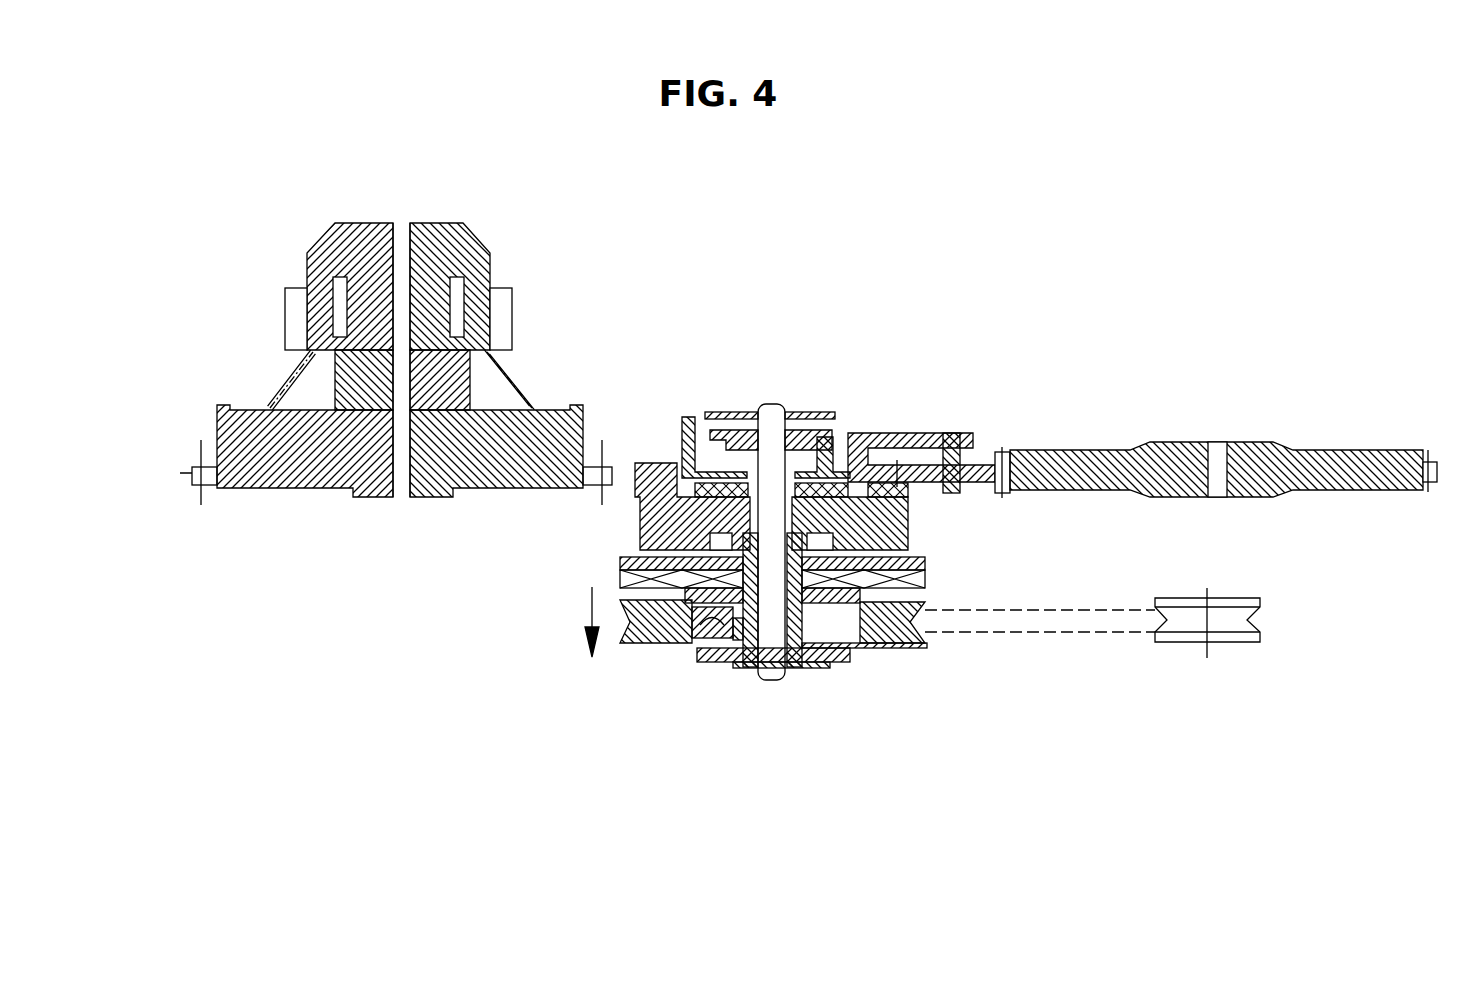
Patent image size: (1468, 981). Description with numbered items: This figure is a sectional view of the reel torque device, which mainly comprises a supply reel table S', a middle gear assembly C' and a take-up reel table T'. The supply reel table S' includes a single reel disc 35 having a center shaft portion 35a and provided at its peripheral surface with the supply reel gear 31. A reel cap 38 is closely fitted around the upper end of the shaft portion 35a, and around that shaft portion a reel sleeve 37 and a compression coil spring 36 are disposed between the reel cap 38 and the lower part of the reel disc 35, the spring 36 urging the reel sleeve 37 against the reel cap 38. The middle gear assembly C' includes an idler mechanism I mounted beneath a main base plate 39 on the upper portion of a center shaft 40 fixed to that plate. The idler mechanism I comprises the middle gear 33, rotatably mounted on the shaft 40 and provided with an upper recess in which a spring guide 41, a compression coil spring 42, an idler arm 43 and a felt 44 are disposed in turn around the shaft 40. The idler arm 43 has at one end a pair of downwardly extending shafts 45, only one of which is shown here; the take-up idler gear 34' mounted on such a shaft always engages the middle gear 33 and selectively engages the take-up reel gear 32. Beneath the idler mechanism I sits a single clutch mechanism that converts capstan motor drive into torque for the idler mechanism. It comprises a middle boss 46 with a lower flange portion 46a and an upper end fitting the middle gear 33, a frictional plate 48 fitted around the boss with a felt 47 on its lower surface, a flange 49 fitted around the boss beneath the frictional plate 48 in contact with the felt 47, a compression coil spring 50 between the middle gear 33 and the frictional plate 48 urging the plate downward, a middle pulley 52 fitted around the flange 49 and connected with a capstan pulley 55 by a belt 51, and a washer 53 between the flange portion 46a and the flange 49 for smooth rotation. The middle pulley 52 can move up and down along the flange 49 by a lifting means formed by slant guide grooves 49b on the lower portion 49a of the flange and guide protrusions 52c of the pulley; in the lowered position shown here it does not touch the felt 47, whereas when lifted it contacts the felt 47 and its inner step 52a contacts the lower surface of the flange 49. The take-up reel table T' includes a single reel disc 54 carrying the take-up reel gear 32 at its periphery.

The supply reel gear 31 is at (192, 473).
The take-up reel gear 32 is at (1433, 468).
The middle gear 33 is at (635, 520).
The take-up idler gear 34' is at (960, 398).
The reel disc 35 is at (286, 456).
The center shaft portion 35a is at (270, 400).
The compression coil spring 36 is at (511, 383).
The reel sleeve 37 is at (280, 294).
The reel cap 38 is at (421, 227).
The main base plate 39 is at (733, 413).
The center shaft 40 is at (770, 404).
The spring guide 41 is at (822, 413).
The compression coil spring 42 is at (707, 412).
The idler arm 43 is at (978, 442).
The felt 44 is at (671, 425).
The downwardly extending shaft 45 is at (945, 430).
The middle boss 46 is at (780, 668).
The flange portion 46a is at (850, 655).
The felt 47 is at (925, 586).
The frictional plate 48 is at (925, 557).
The flange 49 is at (700, 650).
The lower portion 49a is at (828, 670).
The slant guide groove 49b is at (917, 643).
The compression coil spring 50 is at (620, 552).
The belt 51 is at (1110, 622).
The middle pulley 52 is at (935, 645).
The inner step 52a is at (700, 650).
The guide protrusion 52c is at (738, 662).
The washer 53 is at (720, 662).
The reel disc 54 is at (1255, 462).
The capstan pulley 55 is at (1213, 633).
The idler mechanism I is at (690, 403).
The middle gear assembly C' is at (902, 305).
The take-up reel table T' is at (1330, 315).
The supply reel table S' is at (272, 170).